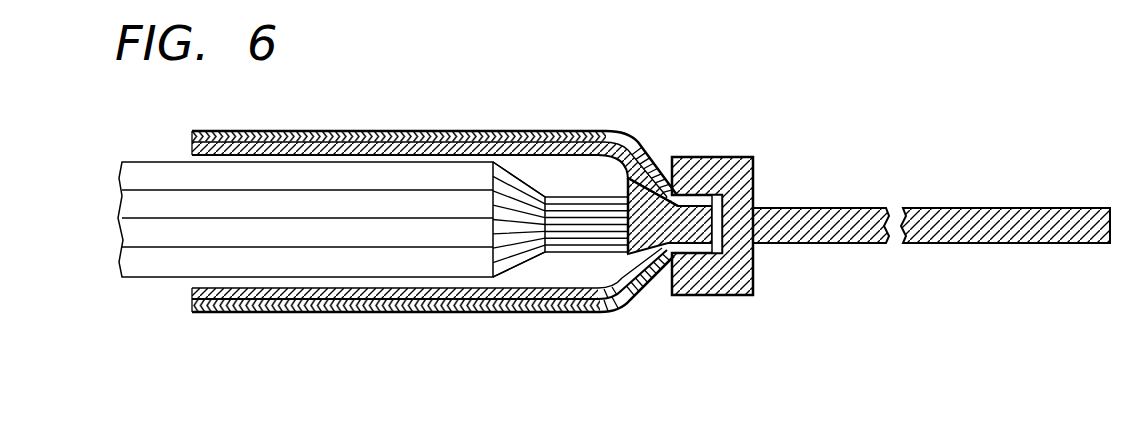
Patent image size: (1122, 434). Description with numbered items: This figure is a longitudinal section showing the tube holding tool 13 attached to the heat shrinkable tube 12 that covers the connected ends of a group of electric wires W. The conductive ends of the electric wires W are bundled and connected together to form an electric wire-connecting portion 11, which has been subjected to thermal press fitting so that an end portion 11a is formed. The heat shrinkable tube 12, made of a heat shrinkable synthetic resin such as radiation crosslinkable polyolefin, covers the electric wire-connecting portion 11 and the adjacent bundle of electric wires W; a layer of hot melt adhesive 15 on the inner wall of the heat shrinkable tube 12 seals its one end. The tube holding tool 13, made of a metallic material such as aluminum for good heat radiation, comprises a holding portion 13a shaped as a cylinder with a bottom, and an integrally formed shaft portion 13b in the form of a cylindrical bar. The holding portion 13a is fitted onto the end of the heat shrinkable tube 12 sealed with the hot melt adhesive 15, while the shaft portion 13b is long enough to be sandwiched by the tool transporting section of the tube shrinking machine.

The electric wires W is at (144, 262).
The electric wire-connecting portion 11 is at (523, 178).
The end portion 11a is at (572, 242).
The heat shrinkable tube 12 is at (417, 137).
The tube holding tool 13 is at (891, 168).
The holding portion 13a is at (742, 158).
The shaft portion 13b is at (927, 207).
The hot melt adhesive 15 is at (686, 240).